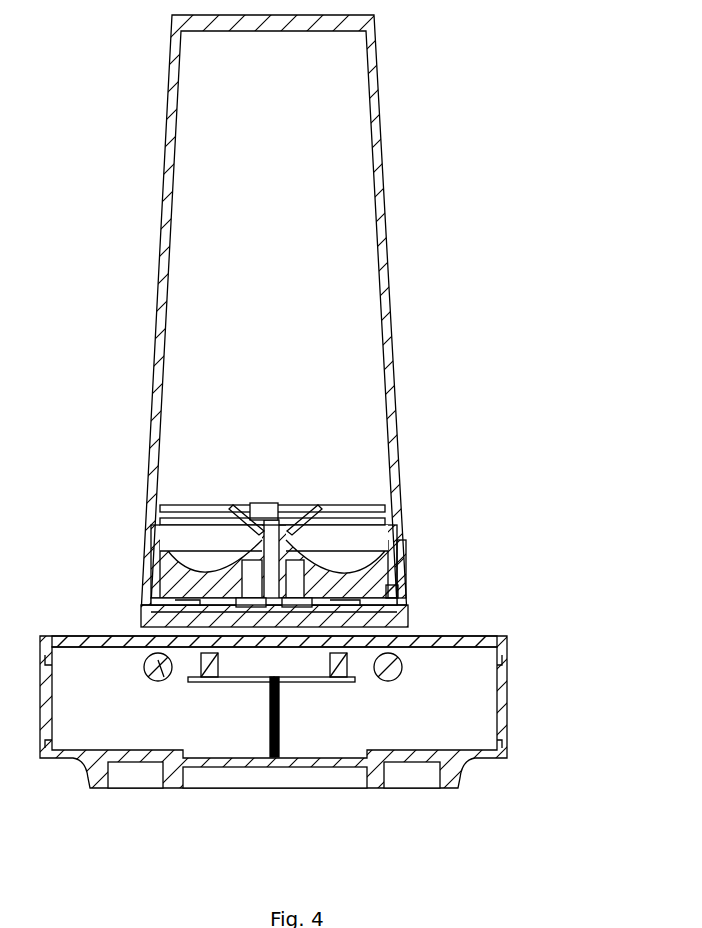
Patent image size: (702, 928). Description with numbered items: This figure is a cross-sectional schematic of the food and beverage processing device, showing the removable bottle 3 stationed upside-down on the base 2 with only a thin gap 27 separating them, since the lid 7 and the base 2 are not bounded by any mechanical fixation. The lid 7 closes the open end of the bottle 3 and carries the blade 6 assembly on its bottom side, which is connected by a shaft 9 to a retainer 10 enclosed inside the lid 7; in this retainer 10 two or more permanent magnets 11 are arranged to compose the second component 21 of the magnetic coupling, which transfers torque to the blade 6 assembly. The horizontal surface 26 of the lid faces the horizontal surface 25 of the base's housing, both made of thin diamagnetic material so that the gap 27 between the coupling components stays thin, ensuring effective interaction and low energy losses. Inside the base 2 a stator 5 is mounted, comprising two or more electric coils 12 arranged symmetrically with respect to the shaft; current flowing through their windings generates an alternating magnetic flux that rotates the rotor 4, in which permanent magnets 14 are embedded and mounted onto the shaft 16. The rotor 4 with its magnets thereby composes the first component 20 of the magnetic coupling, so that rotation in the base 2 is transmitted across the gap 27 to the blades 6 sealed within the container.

The base 2 is at (508, 667).
The bottle 3 is at (390, 264).
The rotor 4 is at (205, 678).
The stator 5 is at (145, 665).
The blade 6 is at (245, 512).
The lid 7 is at (172, 578).
The shaft 9 is at (353, 558).
The retainer 10 is at (383, 522).
The permanent magnets 11 is at (220, 607).
The electric coils 12 is at (168, 696).
The permanent magnets 14 is at (366, 701).
The shaft 16 is at (292, 760).
The first component 20 is at (352, 680).
The second component 21 is at (405, 560).
The horizontal surface 25 is at (442, 642).
The horizontal surface 26 is at (392, 604).
The thin gap 27 is at (142, 626).